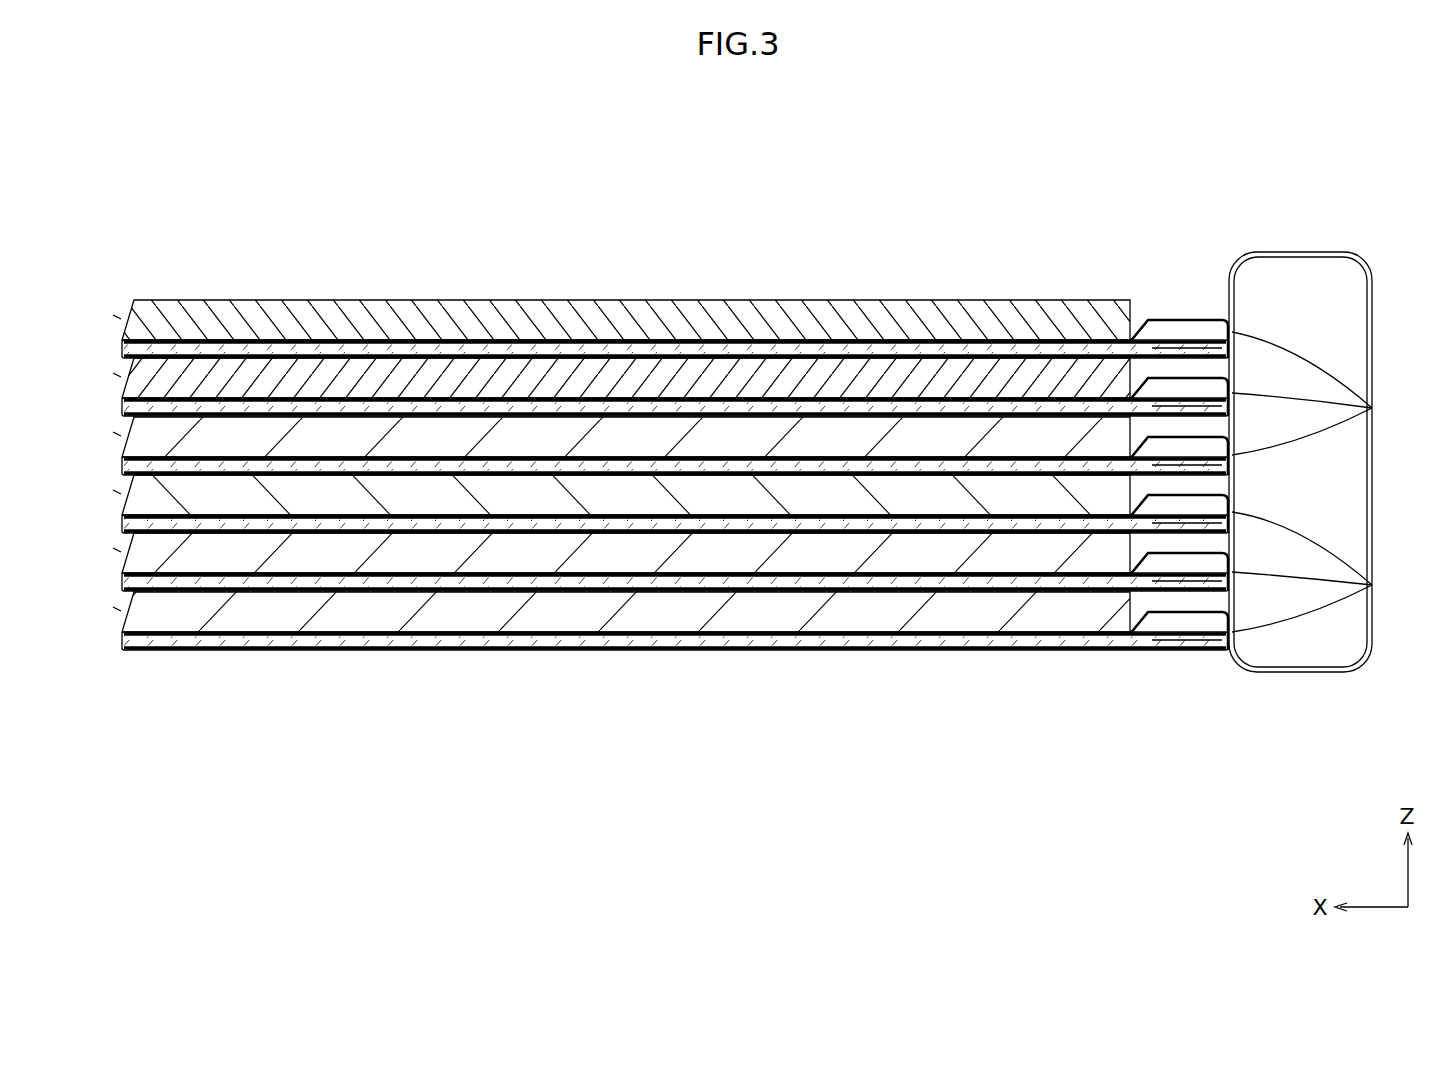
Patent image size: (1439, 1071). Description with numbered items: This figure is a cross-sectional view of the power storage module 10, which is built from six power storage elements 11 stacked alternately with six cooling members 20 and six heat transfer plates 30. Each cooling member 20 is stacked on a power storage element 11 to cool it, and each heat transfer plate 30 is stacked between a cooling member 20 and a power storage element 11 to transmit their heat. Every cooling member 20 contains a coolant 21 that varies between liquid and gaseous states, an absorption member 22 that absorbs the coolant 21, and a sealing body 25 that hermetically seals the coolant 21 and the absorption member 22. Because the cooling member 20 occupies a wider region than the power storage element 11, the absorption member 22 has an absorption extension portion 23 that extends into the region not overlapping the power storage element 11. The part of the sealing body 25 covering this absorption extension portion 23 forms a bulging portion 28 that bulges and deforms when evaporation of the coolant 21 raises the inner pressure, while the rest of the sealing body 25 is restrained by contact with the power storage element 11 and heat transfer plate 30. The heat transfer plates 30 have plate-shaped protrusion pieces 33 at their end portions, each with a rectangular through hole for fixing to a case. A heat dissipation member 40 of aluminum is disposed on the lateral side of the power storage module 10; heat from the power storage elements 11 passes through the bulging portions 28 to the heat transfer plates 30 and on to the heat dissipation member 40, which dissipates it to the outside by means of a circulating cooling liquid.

The power storage module 10 is at (1051, 218).
The power storage element 11 is at (502, 437).
The cooling member 20 is at (117, 339).
The coolant 21 is at (1185, 452).
The absorption member 22 is at (748, 462).
The absorption extension portion 23 is at (1155, 440).
The sealing body 25 is at (970, 460).
The bulging portion 28 is at (1212, 455).
The heat transfer plate 30 is at (118, 355).
The protrusion piece 33 is at (1372, 408).
The heat dissipation member 40 is at (1336, 252).